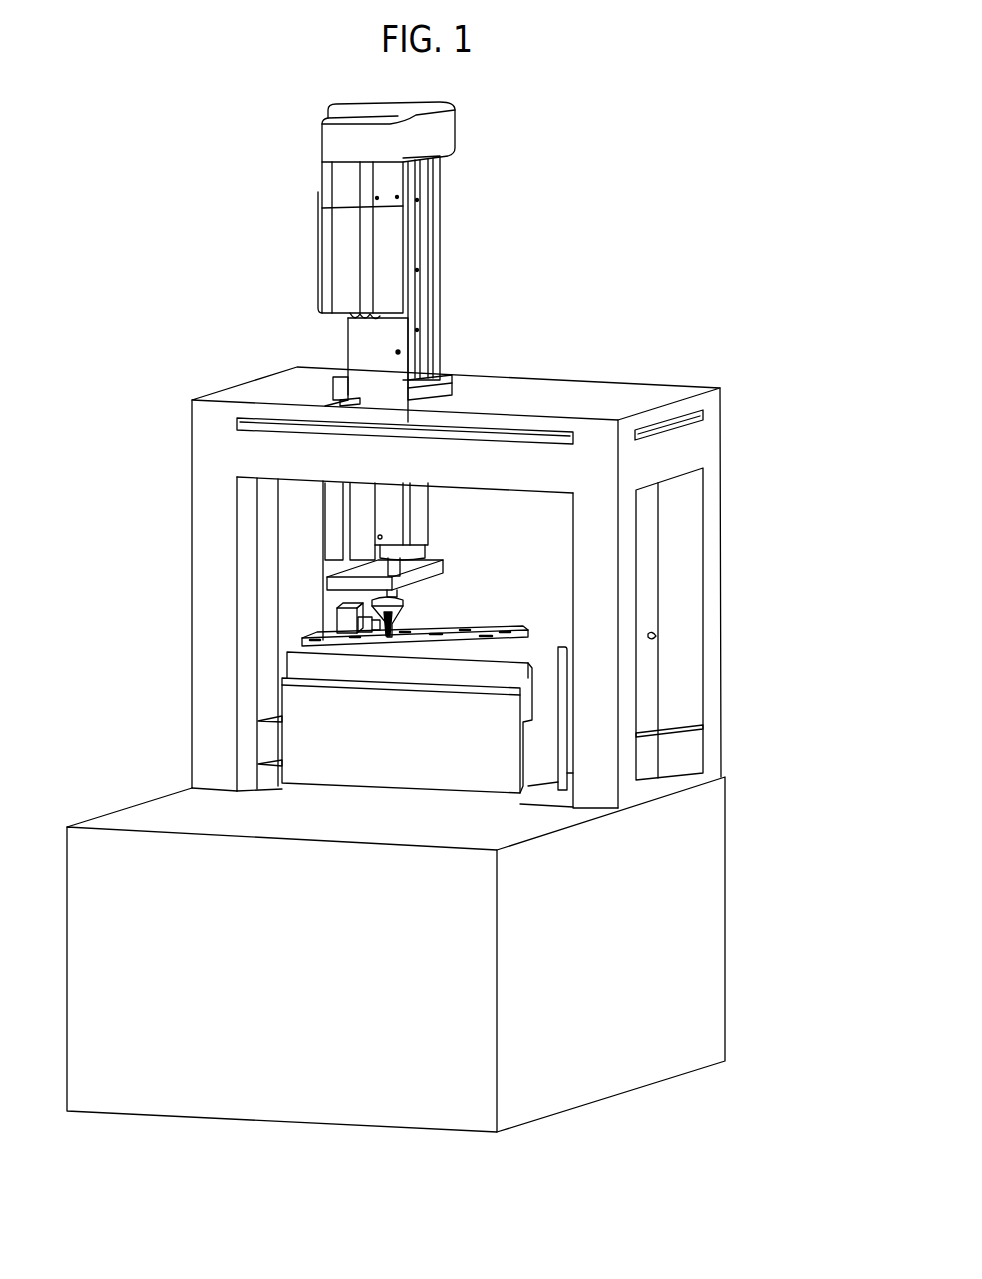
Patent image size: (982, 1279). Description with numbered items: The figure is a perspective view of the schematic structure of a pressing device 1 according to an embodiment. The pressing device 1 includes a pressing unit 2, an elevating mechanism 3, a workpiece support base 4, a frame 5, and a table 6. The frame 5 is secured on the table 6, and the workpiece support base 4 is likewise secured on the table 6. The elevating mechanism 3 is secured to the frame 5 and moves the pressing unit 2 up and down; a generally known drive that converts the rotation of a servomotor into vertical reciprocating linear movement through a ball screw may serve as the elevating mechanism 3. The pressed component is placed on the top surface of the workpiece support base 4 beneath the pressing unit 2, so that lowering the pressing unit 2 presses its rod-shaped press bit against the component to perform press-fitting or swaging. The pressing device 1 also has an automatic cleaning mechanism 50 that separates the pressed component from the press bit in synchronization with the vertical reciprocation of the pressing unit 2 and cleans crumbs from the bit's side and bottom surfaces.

The pressing device 1 is at (672, 230).
The pressing unit 2 is at (425, 600).
The elevating mechanism 3 is at (435, 512).
The workpiece support base 4 is at (313, 745).
The frame 5 is at (705, 447).
The table 6 is at (689, 996).
The automatic cleaning mechanism 50 is at (313, 628).